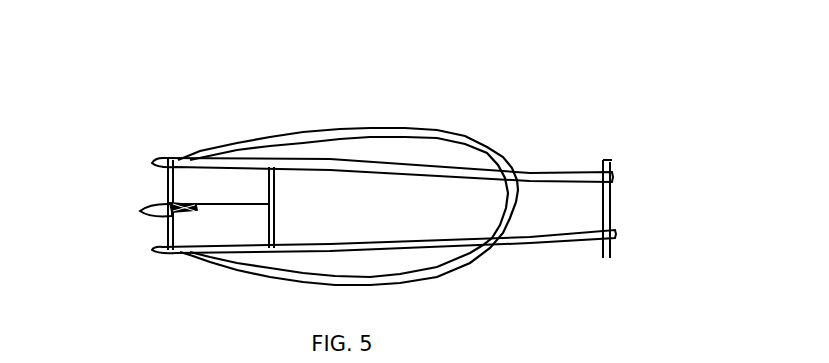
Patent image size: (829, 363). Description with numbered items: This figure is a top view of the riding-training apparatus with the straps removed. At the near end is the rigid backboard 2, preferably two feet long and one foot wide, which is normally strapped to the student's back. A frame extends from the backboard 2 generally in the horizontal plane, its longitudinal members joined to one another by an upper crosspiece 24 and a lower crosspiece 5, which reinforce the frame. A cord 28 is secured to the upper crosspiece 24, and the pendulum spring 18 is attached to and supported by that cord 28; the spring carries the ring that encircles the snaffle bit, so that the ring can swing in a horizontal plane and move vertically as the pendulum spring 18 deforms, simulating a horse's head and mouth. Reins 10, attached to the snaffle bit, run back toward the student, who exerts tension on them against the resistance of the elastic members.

The reins 10 is at (433, 133).
The rigid backboard 2 is at (612, 197).
The lower crosspiece 5 is at (275, 220).
The cord 28 is at (241, 205).
The pendulum spring 18 is at (177, 125).
The upper crosspiece 24 is at (168, 188).